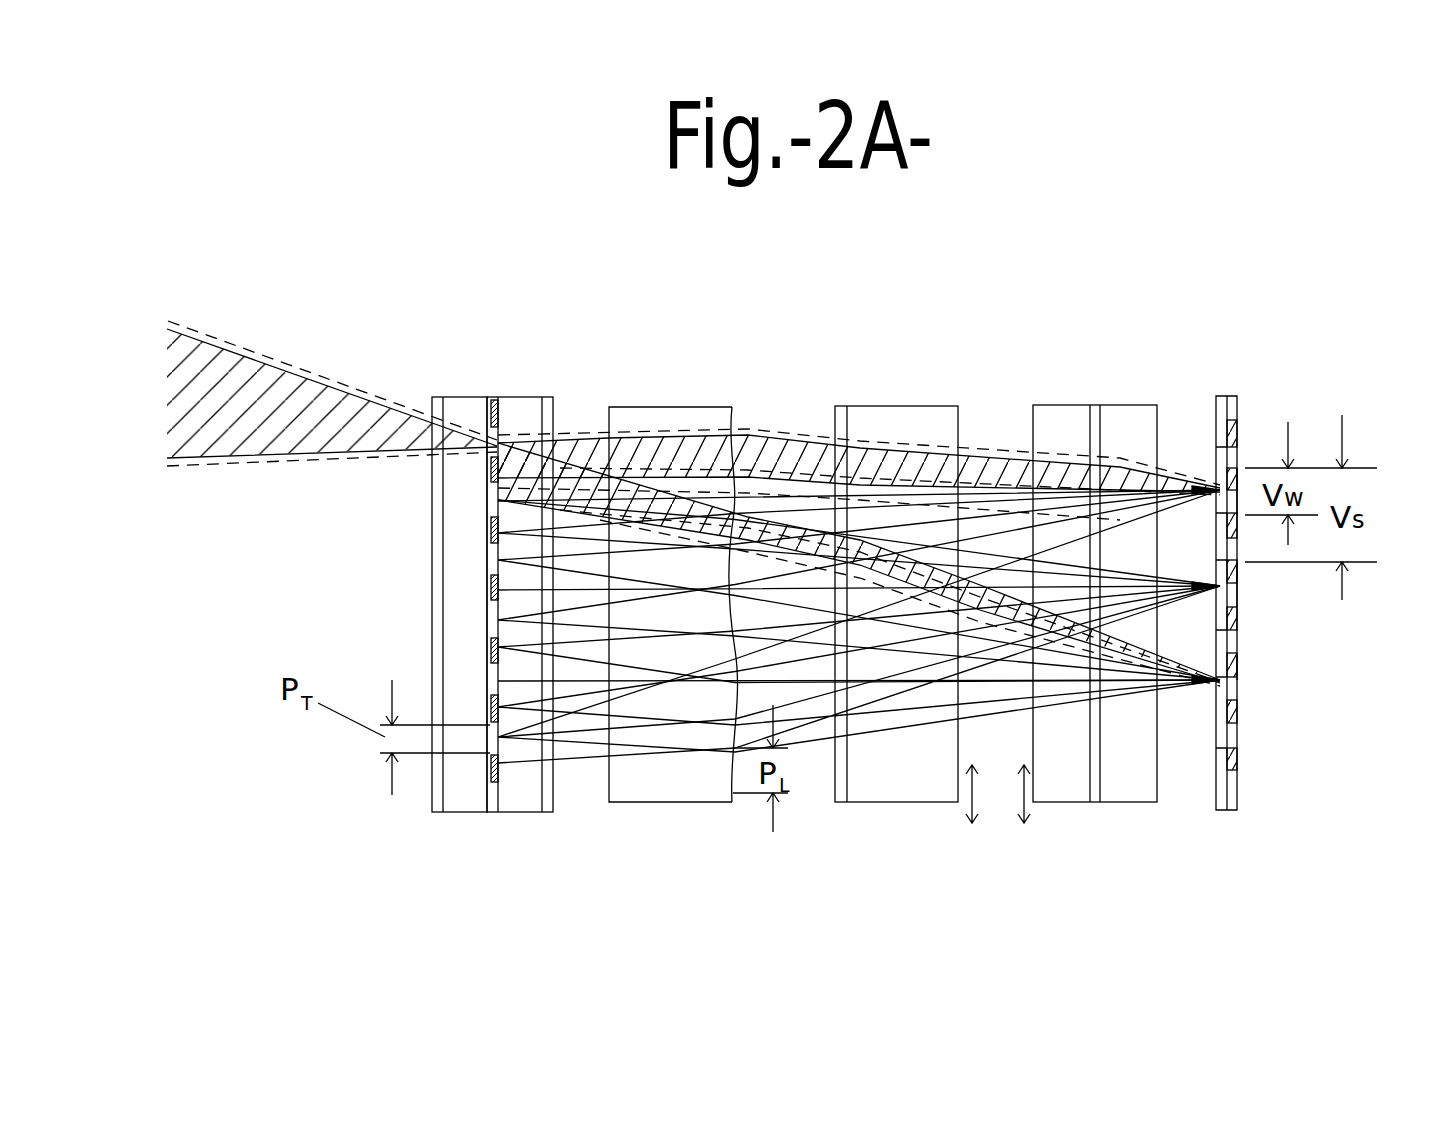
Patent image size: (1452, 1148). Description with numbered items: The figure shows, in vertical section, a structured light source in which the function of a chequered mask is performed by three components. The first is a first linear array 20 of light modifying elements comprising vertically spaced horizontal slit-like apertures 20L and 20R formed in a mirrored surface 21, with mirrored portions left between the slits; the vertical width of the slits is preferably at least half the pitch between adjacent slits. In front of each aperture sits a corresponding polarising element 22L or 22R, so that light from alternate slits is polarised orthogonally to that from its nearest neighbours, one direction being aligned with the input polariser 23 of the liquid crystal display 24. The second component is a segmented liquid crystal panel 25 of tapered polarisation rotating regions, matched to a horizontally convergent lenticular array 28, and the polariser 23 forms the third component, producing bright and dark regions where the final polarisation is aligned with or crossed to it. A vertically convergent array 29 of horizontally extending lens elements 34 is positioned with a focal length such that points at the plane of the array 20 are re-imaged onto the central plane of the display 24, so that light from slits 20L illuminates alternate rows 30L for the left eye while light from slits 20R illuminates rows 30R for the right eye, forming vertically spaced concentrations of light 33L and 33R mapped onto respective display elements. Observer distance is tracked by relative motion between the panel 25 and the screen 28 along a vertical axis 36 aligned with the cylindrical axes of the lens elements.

The first linear array 20 is at (1231, 397).
The mirrored surface 21 is at (1243, 438).
The polarising element 22L is at (1218, 484).
The polarising element 22R is at (1220, 617).
The input polariser 23 is at (553, 399).
The liquid crystal display 24 is at (470, 815).
The segmented liquid crystal panel 25 is at (1052, 420).
The horizontally convergent lenticular array 28 is at (876, 420).
The vertically convergent array 29 is at (686, 787).
The alternate rows 30L is at (492, 623).
The alternate rows 30R is at (492, 568).
The vertically spaced concentrations of light 33L is at (505, 490).
The vertically spaced concentrations of light 33R is at (500, 492).
The lens elements 34 is at (746, 540).
The vertical axis 36 is at (1024, 793).
The slit-like apertures 20L is at (1233, 494).
The slit-like apertures 20R is at (1233, 588).